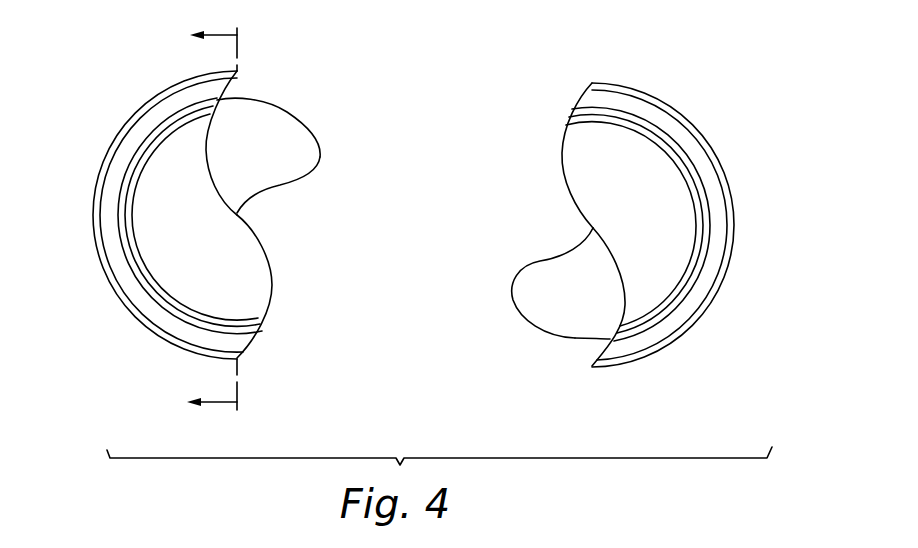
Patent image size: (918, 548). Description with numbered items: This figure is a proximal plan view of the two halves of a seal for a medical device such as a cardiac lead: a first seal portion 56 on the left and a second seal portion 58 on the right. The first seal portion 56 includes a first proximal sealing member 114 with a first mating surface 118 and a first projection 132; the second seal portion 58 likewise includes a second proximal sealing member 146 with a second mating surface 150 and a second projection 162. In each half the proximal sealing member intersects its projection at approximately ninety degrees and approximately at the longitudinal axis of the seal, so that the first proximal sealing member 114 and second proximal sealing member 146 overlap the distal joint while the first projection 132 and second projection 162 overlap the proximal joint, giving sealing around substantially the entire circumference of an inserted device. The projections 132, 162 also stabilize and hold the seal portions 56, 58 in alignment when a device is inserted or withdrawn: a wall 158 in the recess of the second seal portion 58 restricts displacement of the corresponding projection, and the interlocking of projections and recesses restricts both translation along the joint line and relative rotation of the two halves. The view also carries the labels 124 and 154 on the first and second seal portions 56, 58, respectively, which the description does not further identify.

The first seal portion 56 is at (113, 64).
The second seal portion 58 is at (783, 106).
The first proximal sealing member 114 is at (177, 270).
The first mating surface 118 is at (270, 270).
The upper helical lobe 124 is at (266, 92).
The first projection 132 is at (298, 165).
The second proximal sealing member 146 is at (667, 242).
The second mating surface 150 is at (562, 152).
The lobe projection 154 is at (532, 338).
The wall 158 is at (528, 273).
The second projection 162 is at (583, 327).